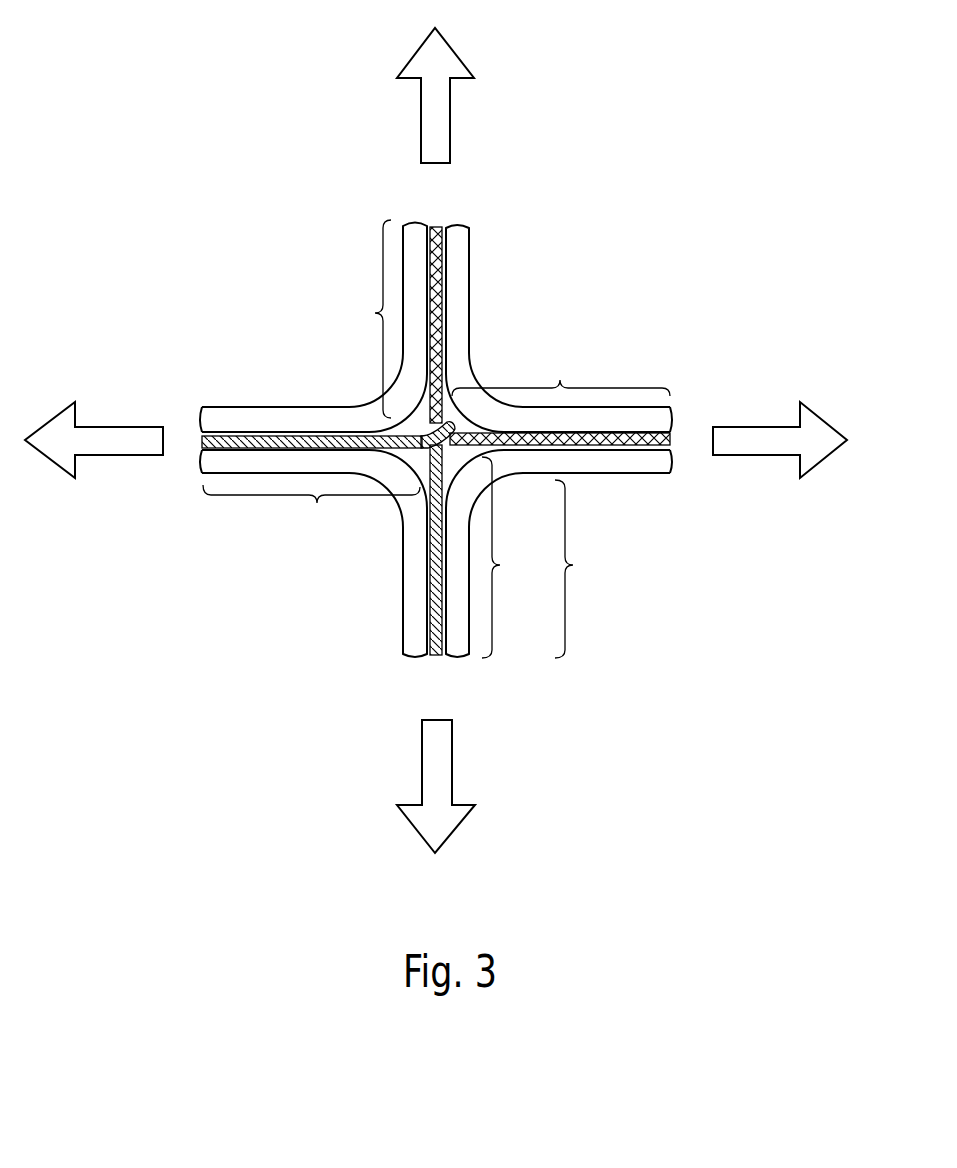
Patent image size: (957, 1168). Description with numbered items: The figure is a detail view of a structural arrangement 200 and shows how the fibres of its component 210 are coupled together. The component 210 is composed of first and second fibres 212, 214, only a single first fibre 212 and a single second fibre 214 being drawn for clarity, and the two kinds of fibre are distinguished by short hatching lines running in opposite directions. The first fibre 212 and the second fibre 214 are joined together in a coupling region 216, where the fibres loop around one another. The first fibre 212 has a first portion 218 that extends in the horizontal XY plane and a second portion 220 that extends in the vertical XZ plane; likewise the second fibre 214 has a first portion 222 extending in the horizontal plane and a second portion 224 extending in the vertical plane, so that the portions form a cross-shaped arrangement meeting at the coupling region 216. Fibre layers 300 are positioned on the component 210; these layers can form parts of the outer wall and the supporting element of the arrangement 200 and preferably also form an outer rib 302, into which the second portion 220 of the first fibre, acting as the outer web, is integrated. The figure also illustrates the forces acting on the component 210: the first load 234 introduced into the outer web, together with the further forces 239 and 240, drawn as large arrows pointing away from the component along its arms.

The structural arrangement 200 is at (250, 92).
The component 210 is at (262, 612).
The first fibre 212 is at (245, 440).
The second fibre 214 is at (446, 268).
The coupling region 216 is at (416, 456).
The first portion of the first fibre 218 is at (311, 514).
The second portion of the first fibre 220 is at (514, 557).
The first portion of the second fibre 222 is at (561, 370).
The second portion of the second fibre 224 is at (359, 319).
The first load 234 is at (440, 767).
The force 239 is at (438, 109).
The force 240 is at (112, 436).
The fibre layers 300 is at (249, 416).
The outer rib 302 is at (587, 569).